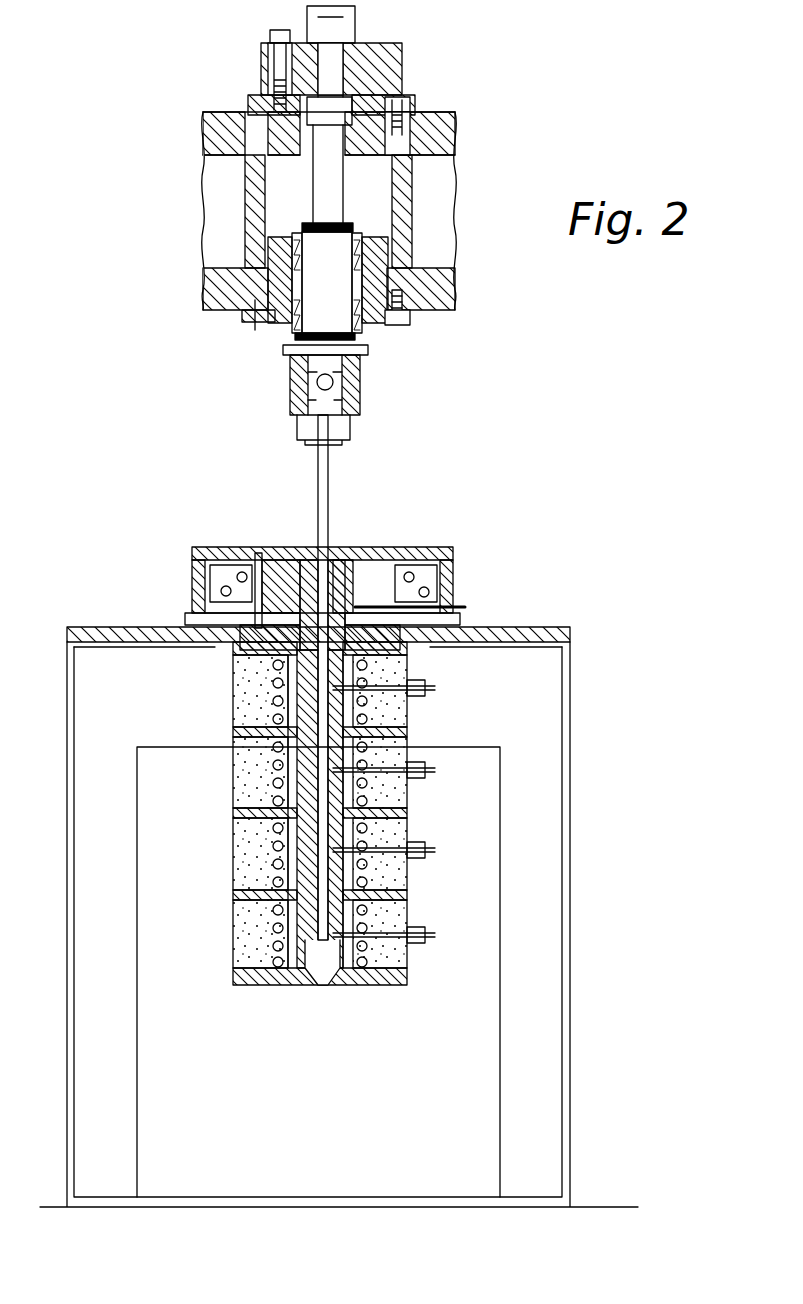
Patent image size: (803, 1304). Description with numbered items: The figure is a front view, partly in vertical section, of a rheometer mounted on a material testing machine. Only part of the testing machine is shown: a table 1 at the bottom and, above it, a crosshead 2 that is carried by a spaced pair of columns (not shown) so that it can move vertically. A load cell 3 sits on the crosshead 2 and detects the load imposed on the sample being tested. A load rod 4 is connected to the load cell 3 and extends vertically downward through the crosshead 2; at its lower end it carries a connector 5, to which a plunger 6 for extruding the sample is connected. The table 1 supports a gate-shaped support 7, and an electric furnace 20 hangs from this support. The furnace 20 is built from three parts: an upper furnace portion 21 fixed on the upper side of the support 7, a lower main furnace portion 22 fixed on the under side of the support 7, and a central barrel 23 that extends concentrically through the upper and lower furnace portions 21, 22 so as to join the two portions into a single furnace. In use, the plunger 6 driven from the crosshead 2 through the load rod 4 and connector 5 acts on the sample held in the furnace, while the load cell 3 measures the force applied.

The table 1 is at (592, 1207).
The crosshead 2 is at (455, 112).
The load cell 3 is at (402, 62).
The load rod 4 is at (346, 197).
The connector 5 is at (358, 380).
The plunger 6 is at (328, 508).
The gate-shaped support 7 is at (516, 630).
The electric furnace 20 is at (160, 603).
The upper furnace portion 21 is at (445, 547).
The lower main furnace portion 22 is at (407, 713).
The central barrel 23 is at (297, 793).